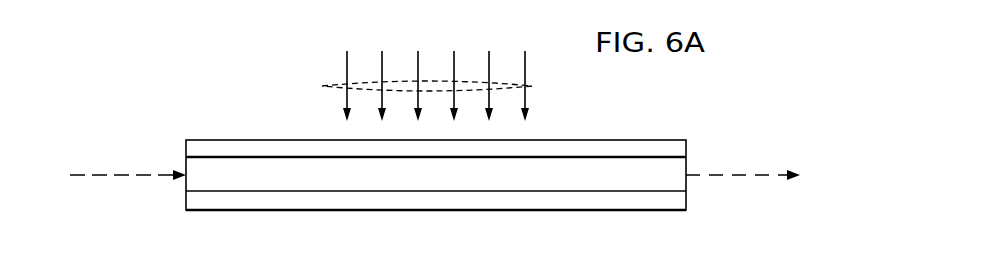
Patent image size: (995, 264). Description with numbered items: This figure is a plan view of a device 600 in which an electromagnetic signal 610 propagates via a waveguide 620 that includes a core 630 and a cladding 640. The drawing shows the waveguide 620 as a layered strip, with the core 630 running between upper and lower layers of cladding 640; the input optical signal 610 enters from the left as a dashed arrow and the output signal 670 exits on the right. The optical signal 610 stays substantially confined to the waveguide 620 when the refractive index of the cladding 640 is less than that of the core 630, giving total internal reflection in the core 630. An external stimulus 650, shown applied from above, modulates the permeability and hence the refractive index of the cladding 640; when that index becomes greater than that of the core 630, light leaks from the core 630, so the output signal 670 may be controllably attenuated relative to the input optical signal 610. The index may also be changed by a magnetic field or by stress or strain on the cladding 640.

The device 600 is at (172, 48).
The electromagnetic signal 610 is at (100, 168).
The waveguide 620 is at (270, 114).
The core 630 is at (678, 185).
The cladding 640 is at (193, 147).
The external stimulus 650 is at (532, 86).
The output signal 670 is at (735, 172).